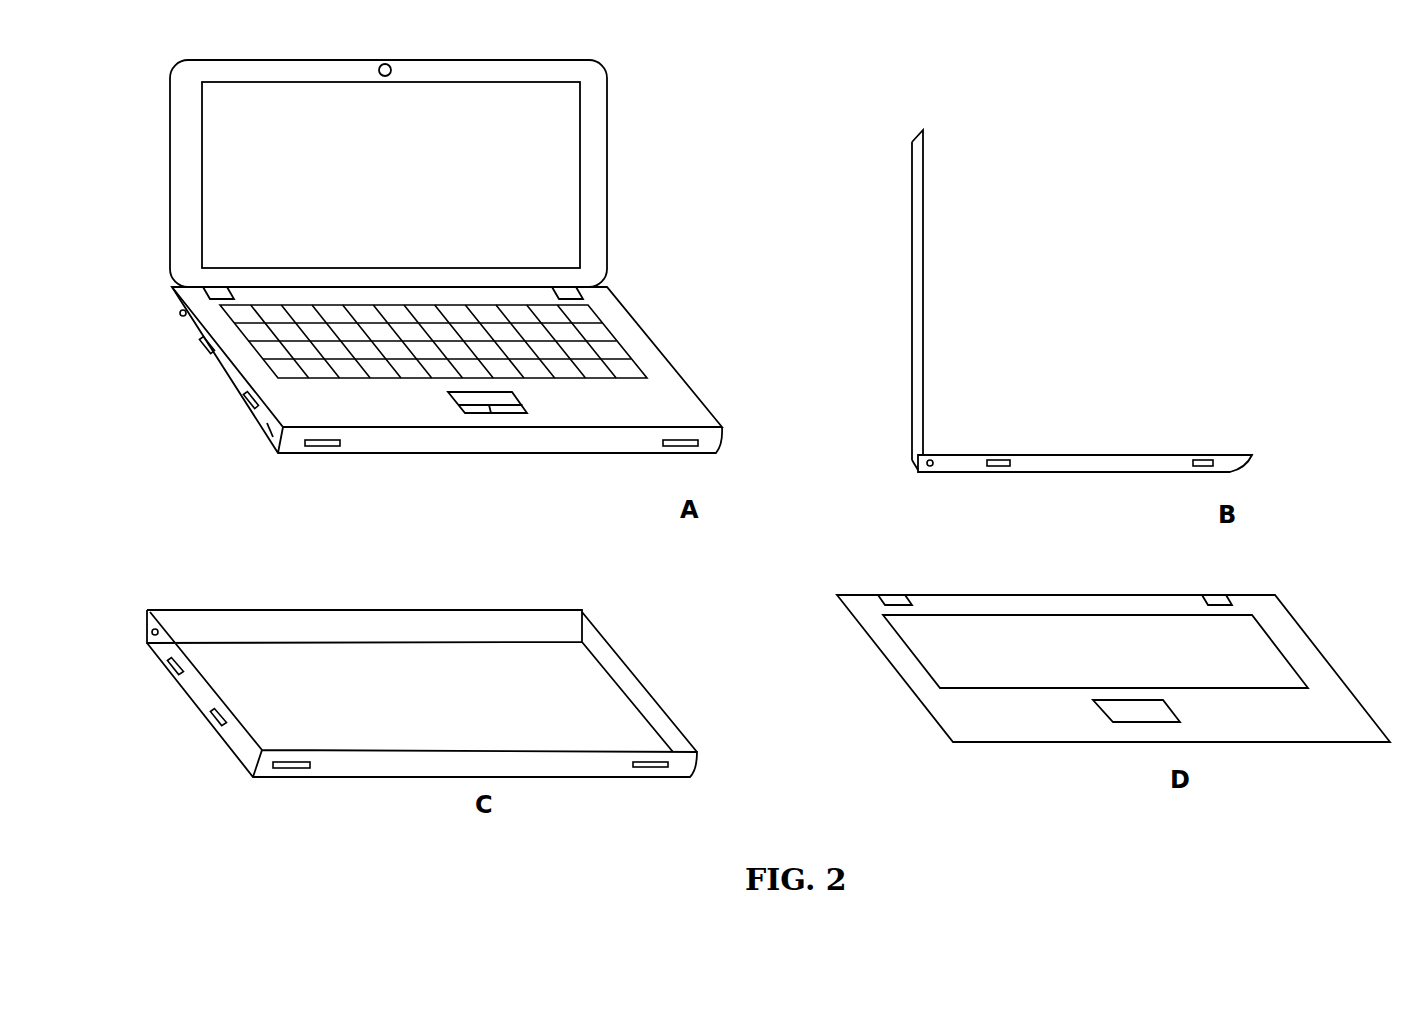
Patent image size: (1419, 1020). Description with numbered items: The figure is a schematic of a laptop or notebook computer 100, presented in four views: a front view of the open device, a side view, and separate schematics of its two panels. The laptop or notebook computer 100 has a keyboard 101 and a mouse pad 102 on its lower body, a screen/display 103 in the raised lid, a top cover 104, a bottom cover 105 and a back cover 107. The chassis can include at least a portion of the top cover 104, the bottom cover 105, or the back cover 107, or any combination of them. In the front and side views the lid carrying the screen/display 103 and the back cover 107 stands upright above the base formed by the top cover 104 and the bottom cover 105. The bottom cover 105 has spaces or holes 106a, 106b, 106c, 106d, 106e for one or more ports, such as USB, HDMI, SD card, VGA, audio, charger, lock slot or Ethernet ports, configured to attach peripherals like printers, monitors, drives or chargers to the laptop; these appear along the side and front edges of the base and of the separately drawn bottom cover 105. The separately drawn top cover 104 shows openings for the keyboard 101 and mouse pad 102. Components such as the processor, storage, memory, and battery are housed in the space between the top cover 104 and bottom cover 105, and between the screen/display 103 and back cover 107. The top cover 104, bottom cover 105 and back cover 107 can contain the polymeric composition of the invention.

The laptop or notebook computer 100 is at (840, 141).
The keyboard 101 is at (610, 348).
The mouse pad 102 is at (500, 400).
The screen/display 103 is at (542, 152).
The top cover 104 is at (668, 387).
The bottom cover 105 is at (452, 445).
The space/hole for port 106a is at (182, 310).
The space/hole for port 106b is at (202, 352).
The space/hole for port 106c is at (243, 410).
The space/hole for port 106d is at (280, 452).
The space/hole for port 106e is at (688, 447).
The back cover 107 is at (912, 170).